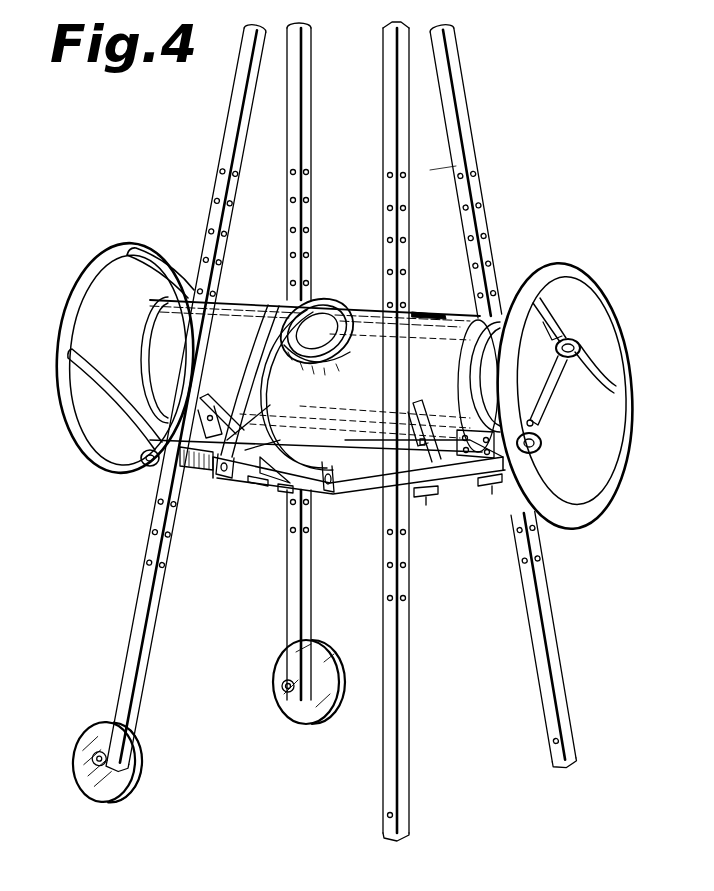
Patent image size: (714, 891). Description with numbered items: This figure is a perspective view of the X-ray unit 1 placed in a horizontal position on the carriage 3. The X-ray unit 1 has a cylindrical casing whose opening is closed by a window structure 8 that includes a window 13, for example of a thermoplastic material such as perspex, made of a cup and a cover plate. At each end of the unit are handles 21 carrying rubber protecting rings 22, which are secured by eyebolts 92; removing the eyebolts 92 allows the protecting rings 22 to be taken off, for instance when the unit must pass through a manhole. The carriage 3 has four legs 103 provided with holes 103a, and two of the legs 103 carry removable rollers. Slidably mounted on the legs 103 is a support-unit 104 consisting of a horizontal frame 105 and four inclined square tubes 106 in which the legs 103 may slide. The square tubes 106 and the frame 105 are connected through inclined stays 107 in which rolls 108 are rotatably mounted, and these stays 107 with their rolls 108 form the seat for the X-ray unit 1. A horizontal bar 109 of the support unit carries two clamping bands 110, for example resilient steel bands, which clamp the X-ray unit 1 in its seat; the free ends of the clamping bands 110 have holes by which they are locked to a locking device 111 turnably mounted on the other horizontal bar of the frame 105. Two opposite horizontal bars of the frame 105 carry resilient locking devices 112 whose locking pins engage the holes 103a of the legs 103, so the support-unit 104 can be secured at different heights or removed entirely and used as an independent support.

The X-ray unit 1 is at (238, 302).
The carriage 3 is at (474, 184).
The window structure 8 is at (343, 300).
The window 13 is at (321, 300).
The handles 21 is at (548, 392).
The rubber protecting rings 22 is at (121, 252).
The eyebolts 92 is at (578, 343).
The legs 103 is at (232, 113).
The holes 103a is at (207, 232).
The support-unit 104 is at (150, 462).
The horizontal frame 105 is at (450, 477).
The inclined square tubes 106 is at (195, 343).
The inclined stays 107 is at (420, 422).
The rolls 108 is at (436, 440).
The horizontal bar 109 is at (455, 302).
The clamping bands 110 is at (338, 413).
The locking device 111 is at (236, 480).
The resilient locking devices 112 is at (428, 500).